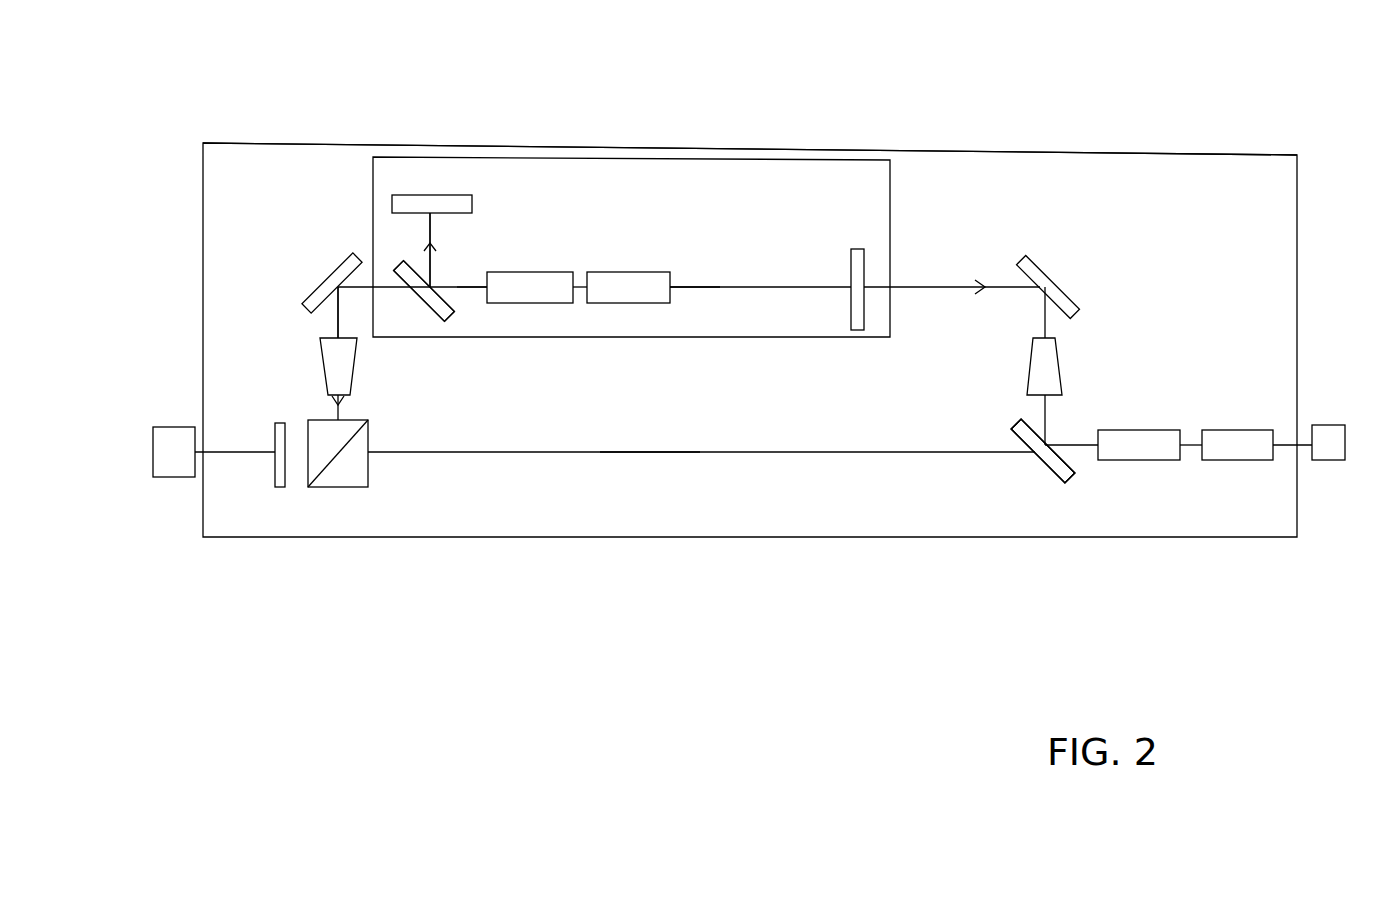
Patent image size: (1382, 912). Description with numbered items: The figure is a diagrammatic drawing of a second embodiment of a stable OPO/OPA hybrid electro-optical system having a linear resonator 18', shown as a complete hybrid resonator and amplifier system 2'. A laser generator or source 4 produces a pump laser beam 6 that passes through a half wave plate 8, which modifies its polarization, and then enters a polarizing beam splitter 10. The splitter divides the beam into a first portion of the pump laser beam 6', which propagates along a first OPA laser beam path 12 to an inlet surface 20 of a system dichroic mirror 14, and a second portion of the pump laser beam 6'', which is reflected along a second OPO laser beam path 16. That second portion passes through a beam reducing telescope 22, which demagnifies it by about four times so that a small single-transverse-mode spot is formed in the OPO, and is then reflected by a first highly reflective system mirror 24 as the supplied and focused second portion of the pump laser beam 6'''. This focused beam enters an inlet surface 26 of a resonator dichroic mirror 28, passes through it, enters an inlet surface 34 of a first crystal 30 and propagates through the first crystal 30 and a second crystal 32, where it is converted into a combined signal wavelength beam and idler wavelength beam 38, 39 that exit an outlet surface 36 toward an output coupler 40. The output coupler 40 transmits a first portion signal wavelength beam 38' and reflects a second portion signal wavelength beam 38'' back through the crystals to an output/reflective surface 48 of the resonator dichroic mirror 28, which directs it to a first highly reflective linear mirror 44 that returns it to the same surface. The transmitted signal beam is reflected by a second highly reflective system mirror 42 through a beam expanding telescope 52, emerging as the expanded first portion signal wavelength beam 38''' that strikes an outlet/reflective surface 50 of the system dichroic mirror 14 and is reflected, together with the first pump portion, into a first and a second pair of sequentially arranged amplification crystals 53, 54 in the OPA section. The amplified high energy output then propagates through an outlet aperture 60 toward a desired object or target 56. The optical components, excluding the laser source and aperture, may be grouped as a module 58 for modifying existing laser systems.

The complete hybrid resonator and amplifier system 2' is at (783, 283).
The laser generator or source 4 is at (174, 467).
The pump laser beam 6 is at (213, 412).
The first portion of the pump laser beam 6' is at (650, 431).
The second portion of the pump laser beam 6'' is at (383, 414).
The supplied and focused second portion of the pump laser beam 6''' is at (244, 300).
The half wave plate 8 is at (284, 475).
The polarizing beam splitter 10 is at (343, 475).
The first OPA laser beam path 12 is at (480, 455).
The system dichroic mirror 14 is at (1053, 475).
The second OPO laser beam path 16 is at (336, 325).
The linear resonator 18' is at (631, 193).
The inlet surface 20 is at (1013, 434).
The beam reducing telescope 22 is at (357, 352).
The first highly reflective system mirror 24 is at (322, 295).
The inlet surface 26 is at (426, 302).
The resonator dichroic mirror 28 is at (452, 318).
The first crystal 30 is at (550, 293).
The second crystal 32 is at (632, 293).
The inlet surface 34 is at (483, 277).
The outlet surface 36 is at (672, 285).
The OPO output beam 38, 39 is at (767, 287).
The first portion signal wavelength beam 38' is at (952, 251).
The second portion signal wavelength beam 38'' is at (321, 232).
The expanded first portion signal wavelength beam 38''' is at (1096, 406).
The output coupler 40 is at (858, 270).
The second highly reflective system mirror 42 is at (1070, 292).
The first highly reflective linear mirror 44 is at (392, 203).
The output/reflective surface 48 is at (428, 233).
The outlet/reflective surface 50 is at (1066, 462).
The beam expanding telescope 52 is at (1048, 365).
The first amplification crystal 53 is at (1150, 450).
The second amplification crystal 54 is at (1232, 450).
The object or target 56 is at (1327, 452).
The module 58 is at (970, 150).
The outlet aperture 60 is at (1301, 442).